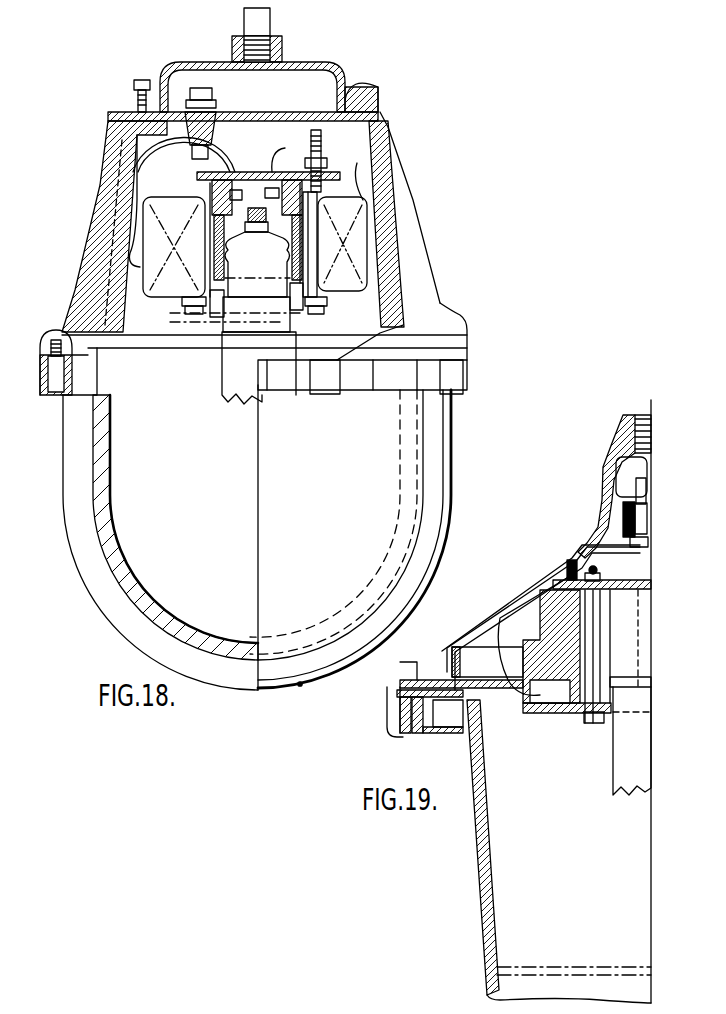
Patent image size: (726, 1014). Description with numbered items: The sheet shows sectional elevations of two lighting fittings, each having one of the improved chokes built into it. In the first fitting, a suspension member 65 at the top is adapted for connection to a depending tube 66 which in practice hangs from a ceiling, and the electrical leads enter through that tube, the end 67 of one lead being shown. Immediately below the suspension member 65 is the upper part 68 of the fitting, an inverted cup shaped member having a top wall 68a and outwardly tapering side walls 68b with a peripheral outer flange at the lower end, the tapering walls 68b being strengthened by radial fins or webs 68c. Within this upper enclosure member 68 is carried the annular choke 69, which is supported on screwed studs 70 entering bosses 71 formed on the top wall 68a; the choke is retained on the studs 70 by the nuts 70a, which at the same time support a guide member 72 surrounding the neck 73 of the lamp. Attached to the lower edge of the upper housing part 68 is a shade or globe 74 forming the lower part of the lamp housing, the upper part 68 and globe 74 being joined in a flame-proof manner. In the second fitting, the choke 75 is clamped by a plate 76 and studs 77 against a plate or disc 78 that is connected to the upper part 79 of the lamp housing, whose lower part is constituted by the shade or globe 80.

In FIG. 18, the suspension member 65 is at (312, 64).
In FIG. 18, the depending tube 66 is at (268, 22).
In FIG. 18, the end of lead 67 is at (232, 101).
In FIG. 18, the upper part of the lighting fitting 68 is at (86, 219).
In FIG. 18, the top wall 68a is at (298, 112).
In FIG. 18, the outwardly tapering side walls 68b is at (395, 156).
In FIG. 18, the radial fins or webs 68c is at (447, 312).
In FIG. 18, the annular choke 69 is at (363, 267).
In FIG. 18, the screwed studs 70 is at (324, 256).
In FIG. 18, the nuts 70a is at (323, 304).
In FIG. 18, the bosses 71 is at (310, 145).
In FIG. 18, the guide member 72 is at (297, 313).
In FIG. 18, the neck of the lamp 73 is at (228, 358).
In FIG. 18, the shade or globe 74 is at (140, 582).
In FIG. 19, the choke 75 is at (540, 597).
In FIG. 19, the plate 76 is at (592, 723).
In FIG. 19, the studs 77 is at (597, 660).
In FIG. 19, the plate or disc 78 is at (608, 582).
In FIG. 19, the upper part of the lamp housing 79 is at (563, 561).
In FIG. 19, the shade or globe 80 is at (482, 783).